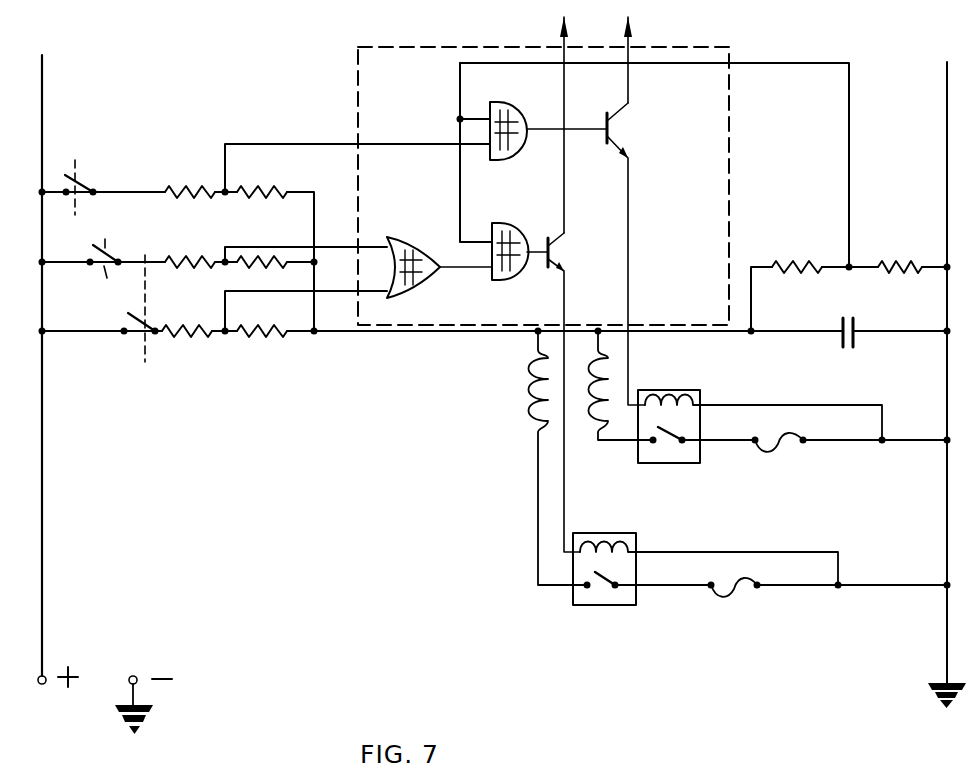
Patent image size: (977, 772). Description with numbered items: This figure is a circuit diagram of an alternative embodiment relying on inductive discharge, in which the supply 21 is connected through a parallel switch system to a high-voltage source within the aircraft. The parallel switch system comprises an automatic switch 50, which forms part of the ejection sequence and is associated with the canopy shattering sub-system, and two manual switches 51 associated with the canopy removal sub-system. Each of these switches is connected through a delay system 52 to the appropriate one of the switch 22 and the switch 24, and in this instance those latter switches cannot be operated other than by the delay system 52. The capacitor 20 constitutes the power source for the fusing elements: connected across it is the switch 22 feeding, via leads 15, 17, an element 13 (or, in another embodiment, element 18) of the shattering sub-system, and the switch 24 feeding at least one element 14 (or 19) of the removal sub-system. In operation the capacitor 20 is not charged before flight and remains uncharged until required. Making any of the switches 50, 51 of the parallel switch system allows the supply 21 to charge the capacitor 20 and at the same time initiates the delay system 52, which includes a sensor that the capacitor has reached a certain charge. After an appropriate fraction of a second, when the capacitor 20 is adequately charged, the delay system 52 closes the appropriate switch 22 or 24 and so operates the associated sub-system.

The element 13 is at (780, 460).
The element 14 is at (738, 609).
The leads 15 is at (824, 536).
The supply line 17 is at (842, 442).
The element 18 is at (780, 450).
The element 19 is at (737, 598).
The capacitor 20 is at (854, 318).
The supply 21 is at (105, 700).
The switch 22 is at (638, 463).
The switch 24 is at (573, 605).
The automatic switch 50 is at (95, 180).
The manual switches 51 is at (131, 312).
The delay system 52 is at (358, 82).